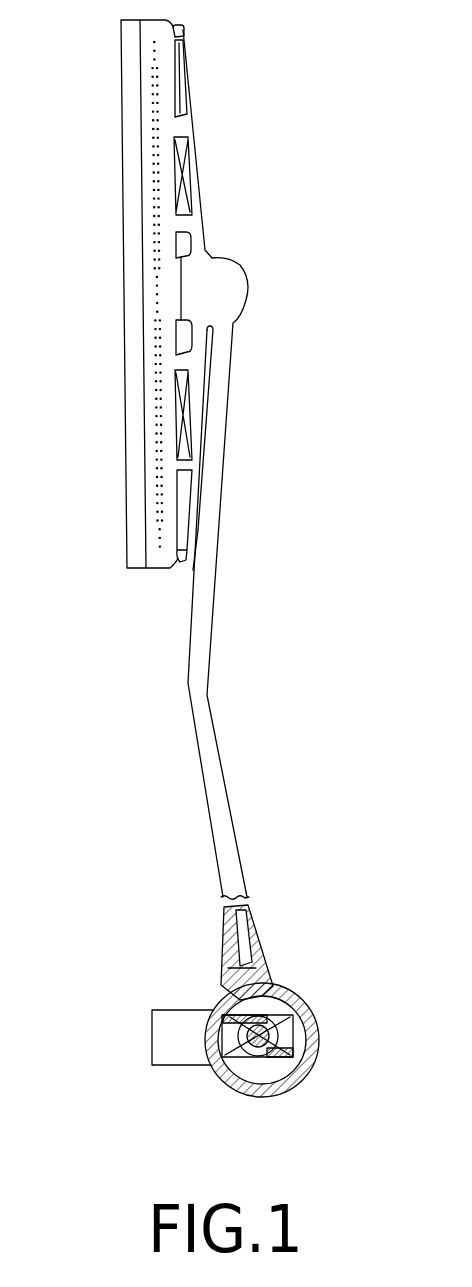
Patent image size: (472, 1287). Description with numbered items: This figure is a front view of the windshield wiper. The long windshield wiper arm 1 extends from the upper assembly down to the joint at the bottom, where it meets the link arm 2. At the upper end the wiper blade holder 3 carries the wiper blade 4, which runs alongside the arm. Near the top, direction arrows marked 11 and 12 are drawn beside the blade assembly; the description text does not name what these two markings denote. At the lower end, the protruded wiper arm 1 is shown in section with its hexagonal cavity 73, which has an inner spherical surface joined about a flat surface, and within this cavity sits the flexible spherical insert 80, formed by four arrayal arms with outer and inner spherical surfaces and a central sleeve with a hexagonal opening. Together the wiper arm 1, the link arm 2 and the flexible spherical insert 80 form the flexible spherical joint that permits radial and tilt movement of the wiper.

The windshield wiper arm 1 is at (213, 607).
The link arm 2 is at (177, 1062).
The wiper blade holder 3 is at (170, 567).
The wiper blade 4 is at (125, 428).
The light emitting direction 11 is at (68, 65).
The light emitting direction 12 is at (302, 337).
The hexagonal cavity 73 is at (275, 1000).
The flexible spherical insert 80 is at (282, 1060).